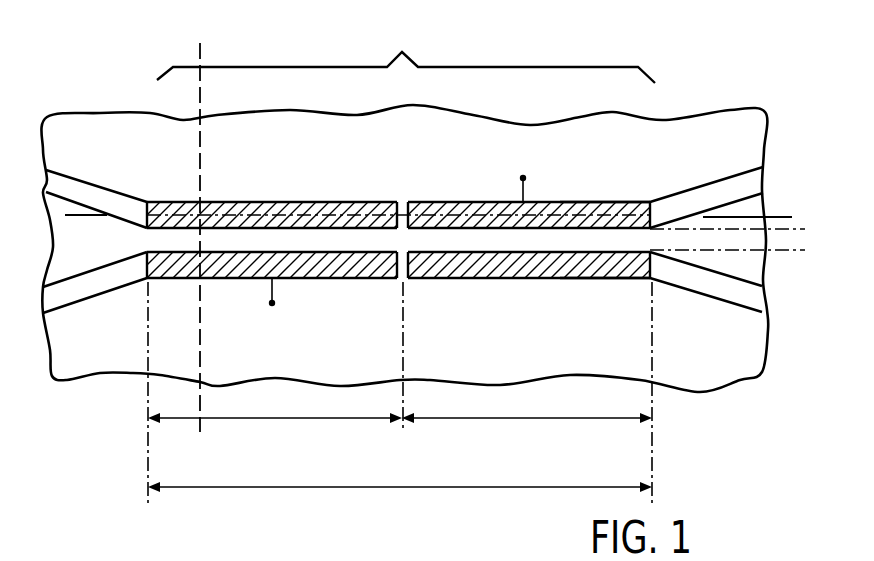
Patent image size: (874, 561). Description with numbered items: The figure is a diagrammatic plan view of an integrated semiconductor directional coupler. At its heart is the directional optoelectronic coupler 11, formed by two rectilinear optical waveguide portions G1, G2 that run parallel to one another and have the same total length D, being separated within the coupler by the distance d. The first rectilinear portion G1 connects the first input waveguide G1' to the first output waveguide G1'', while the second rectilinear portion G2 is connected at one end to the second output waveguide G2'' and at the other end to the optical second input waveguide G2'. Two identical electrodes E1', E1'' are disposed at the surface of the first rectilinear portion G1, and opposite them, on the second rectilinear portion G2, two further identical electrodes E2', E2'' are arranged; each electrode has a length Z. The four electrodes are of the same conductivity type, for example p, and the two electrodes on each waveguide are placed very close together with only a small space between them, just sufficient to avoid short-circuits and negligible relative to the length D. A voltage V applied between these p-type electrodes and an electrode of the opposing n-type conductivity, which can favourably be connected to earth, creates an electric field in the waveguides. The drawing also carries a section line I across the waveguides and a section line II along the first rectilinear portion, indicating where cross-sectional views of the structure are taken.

The directional optoelectronic coupler 11 is at (405, 41).
The electrode E1' is at (525, 183).
The electrode E1'' is at (385, 183).
The electrode E2' is at (525, 307).
The electrode E2'' is at (385, 307).
The rectilinear optical waveguide portion G1 is at (605, 173).
The first input waveguide G1' is at (734, 175).
The first output waveguide G1'' is at (96, 149).
The rectilinear optical waveguide portion G2 is at (605, 310).
The second input waveguide G2' is at (730, 306).
The second output waveguide G2'' is at (95, 341).
The voltage V is at (398, 242).
The distance d is at (796, 250).
The electrode length Z is at (400, 406).
The total length of the coupler D is at (400, 474).
The section line I is at (208, 239).
The section line II is at (67, 223).